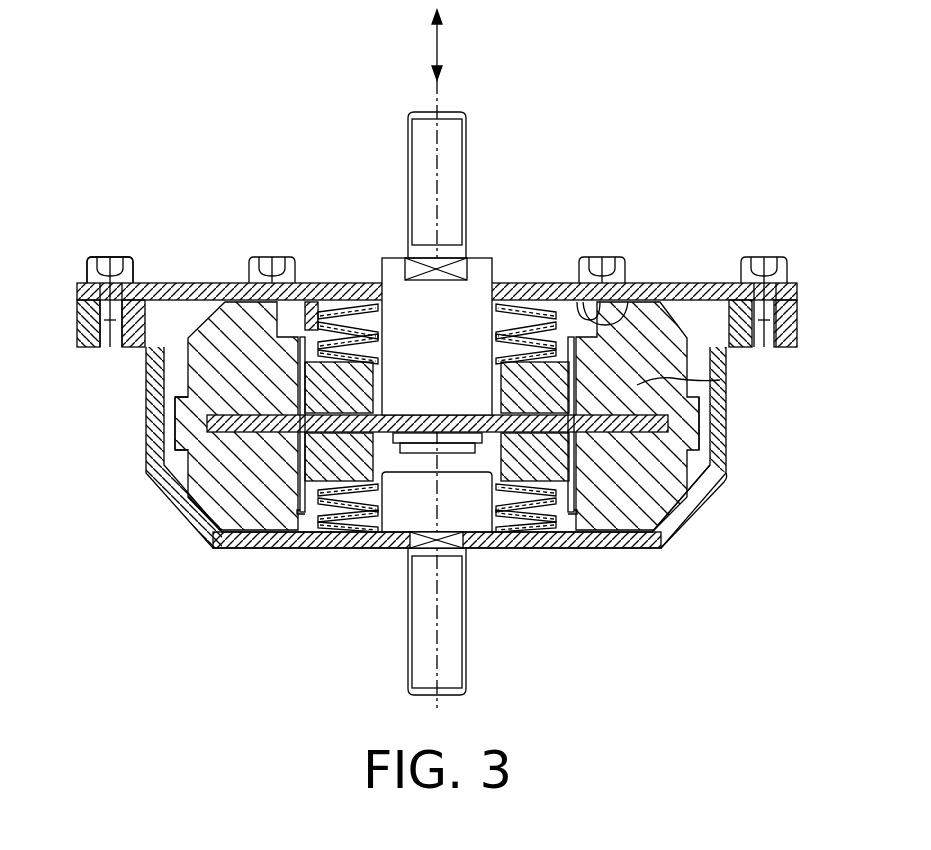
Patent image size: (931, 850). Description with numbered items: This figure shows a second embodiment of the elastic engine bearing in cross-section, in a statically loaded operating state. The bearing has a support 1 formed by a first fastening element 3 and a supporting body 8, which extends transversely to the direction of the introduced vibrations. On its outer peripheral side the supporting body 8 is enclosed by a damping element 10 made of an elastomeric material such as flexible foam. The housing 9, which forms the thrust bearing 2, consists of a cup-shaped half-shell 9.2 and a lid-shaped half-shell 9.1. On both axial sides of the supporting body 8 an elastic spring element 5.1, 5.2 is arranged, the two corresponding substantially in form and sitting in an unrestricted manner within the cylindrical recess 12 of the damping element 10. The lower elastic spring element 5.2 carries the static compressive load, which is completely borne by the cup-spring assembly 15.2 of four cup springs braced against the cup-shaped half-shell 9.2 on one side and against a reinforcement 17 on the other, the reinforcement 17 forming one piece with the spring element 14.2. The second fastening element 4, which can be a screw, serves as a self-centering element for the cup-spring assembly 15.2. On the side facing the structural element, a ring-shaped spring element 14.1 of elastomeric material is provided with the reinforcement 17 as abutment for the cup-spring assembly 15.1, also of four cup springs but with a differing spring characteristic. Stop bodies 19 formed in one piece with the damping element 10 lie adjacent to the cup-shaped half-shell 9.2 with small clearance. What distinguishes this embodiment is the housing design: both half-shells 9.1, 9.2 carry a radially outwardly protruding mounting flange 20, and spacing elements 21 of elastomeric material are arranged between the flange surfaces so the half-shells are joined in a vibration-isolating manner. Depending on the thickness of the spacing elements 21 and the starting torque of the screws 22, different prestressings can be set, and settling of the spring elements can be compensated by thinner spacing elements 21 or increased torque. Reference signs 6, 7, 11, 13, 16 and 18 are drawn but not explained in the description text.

The support 1 is at (397, 310).
The thrust bearing 2 is at (220, 548).
The first fastening element 3 is at (440, 172).
The second fastening element 4 is at (420, 655).
The elastic spring element 5.1 is at (567, 303).
The elastic spring element 5.2 is at (302, 527).
The housing wall 6 is at (722, 363).
The axial direction arrow 7 is at (440, 53).
The supporting body 8 is at (298, 470).
The housing 9 is at (433, 430).
The lid-shaped housing half-shell 9.1 is at (221, 283).
The cup-shaped housing half-shell 9.2 is at (690, 515).
The damping element 10 is at (222, 373).
The right rotor body 11 is at (615, 320).
The cylindrical recess 12 is at (420, 457).
The retaining ring 13 is at (178, 350).
The ring-shaped spring element 14.1 is at (720, 380).
The spring element 14.2 is at (208, 543).
The cup-spring assembly 15.1 is at (352, 306).
The cup-spring assembly 15.2 is at (523, 537).
The spring seat 16 is at (327, 323).
The reinforcement 17 is at (522, 307).
The bearing ring 18 is at (600, 322).
The stop body 19 is at (690, 427).
The mounting flange 20 is at (77, 293).
The spacing element 21 is at (77, 312).
The screw 22 is at (110, 255).